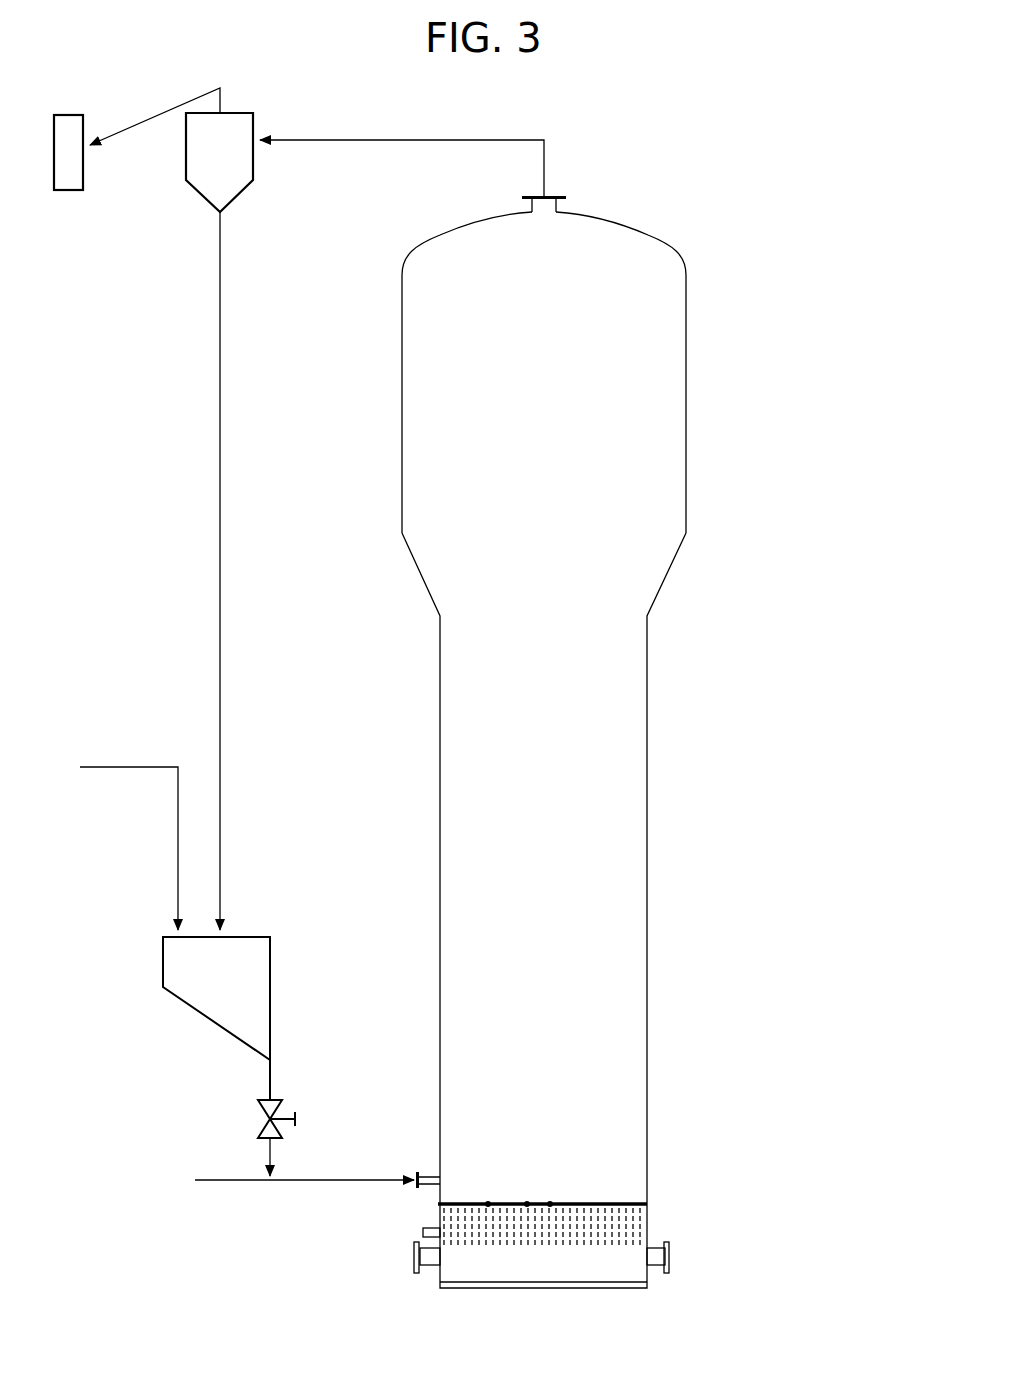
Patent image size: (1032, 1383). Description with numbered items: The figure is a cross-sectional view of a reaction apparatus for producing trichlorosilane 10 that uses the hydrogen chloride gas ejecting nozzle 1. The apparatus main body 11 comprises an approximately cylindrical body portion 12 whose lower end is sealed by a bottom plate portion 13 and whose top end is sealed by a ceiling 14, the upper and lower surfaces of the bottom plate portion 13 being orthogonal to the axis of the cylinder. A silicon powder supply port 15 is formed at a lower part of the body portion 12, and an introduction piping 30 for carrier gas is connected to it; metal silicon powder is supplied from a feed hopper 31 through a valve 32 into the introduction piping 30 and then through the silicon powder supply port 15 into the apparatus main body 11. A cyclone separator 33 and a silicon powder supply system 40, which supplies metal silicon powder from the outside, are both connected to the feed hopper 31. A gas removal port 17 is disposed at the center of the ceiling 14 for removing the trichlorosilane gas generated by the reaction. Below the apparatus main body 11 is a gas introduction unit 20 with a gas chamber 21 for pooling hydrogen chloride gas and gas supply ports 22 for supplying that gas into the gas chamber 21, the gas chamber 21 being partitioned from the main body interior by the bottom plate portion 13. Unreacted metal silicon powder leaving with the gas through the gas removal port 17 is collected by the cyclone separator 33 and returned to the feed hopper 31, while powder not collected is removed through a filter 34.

The reaction apparatus for producing trichlorosilane 10 is at (828, 190).
The apparatus main body 11 is at (712, 291).
The body portion 12 is at (688, 345).
The bottom plate portion 13 is at (460, 1203).
The ceiling 14 is at (460, 228).
The silicon powder supply port 15 is at (430, 1177).
The gas removal port 17 is at (548, 198).
The hydrogen chloride gas ejecting nozzle 1 is at (526, 1202).
The gas introduction unit 20 is at (500, 1268).
The gas chamber 21 is at (597, 1258).
The gas supply port 22 is at (669, 1254).
The introduction piping for carrier gas 30 is at (295, 1182).
The feed hopper 31 is at (260, 983).
The valve 32 is at (285, 1100).
The cyclone separator 33 is at (253, 170).
The filter 34 is at (84, 173).
The silicon powder supply system 40 is at (130, 765).